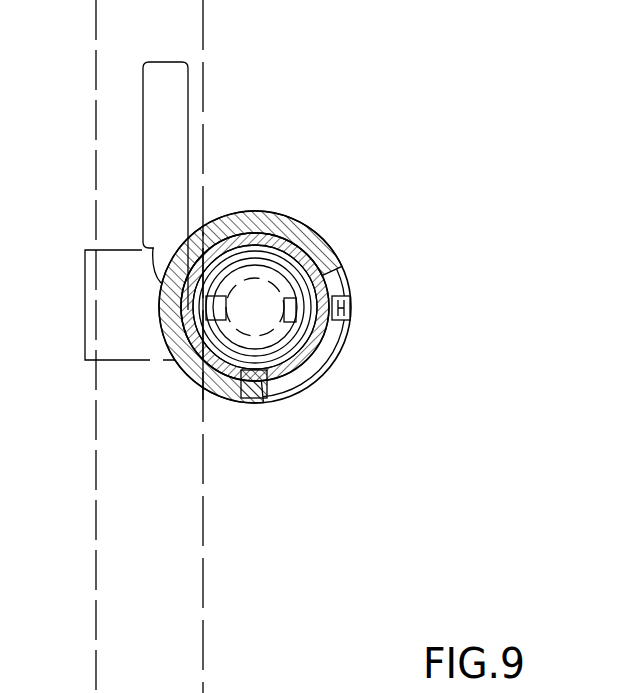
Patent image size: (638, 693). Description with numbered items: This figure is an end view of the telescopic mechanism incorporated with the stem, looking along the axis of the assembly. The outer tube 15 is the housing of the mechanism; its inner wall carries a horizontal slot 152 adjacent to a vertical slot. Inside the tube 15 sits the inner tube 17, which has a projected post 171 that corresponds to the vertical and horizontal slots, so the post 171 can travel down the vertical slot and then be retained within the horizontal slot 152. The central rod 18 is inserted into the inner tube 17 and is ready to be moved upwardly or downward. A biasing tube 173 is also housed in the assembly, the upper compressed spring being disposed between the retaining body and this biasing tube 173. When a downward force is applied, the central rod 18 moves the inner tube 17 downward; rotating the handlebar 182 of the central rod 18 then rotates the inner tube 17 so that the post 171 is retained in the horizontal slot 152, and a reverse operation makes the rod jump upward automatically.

The tube 15 is at (188, 243).
The inner tube 17 is at (317, 348).
The central rod 18 is at (254, 306).
The horizontal slot 152 is at (307, 377).
The post 171 is at (254, 395).
The biasing tube 173 is at (312, 330).
The handlebar 182 is at (162, 85).